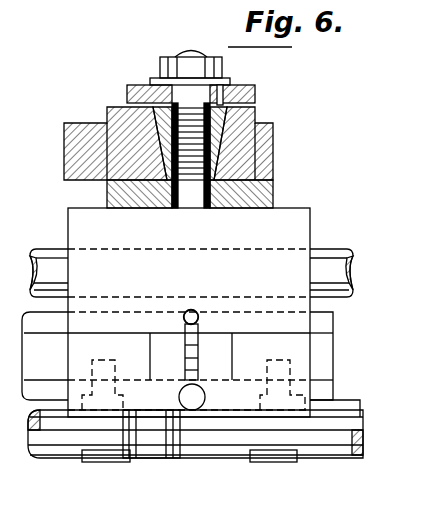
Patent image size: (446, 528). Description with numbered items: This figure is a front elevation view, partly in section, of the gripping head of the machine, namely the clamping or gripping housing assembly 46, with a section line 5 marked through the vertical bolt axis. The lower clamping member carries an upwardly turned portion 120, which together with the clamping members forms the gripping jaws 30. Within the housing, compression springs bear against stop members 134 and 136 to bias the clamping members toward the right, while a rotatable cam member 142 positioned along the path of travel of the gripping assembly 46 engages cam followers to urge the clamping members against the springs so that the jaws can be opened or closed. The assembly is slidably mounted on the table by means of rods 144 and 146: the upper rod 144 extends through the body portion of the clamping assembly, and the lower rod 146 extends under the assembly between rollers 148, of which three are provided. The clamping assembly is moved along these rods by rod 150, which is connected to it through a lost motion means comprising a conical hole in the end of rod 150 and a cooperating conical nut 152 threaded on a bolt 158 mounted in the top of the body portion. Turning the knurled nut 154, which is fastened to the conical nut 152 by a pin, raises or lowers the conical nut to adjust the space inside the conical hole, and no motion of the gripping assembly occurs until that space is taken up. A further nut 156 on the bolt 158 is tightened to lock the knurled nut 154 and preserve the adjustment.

The section line 5- 5 is at (191, 100).
The gripping jaws 30 is at (220, 295).
The clamping or gripping housing assembly 46 is at (64, 341).
The upwardly turned portion 120 is at (186, 360).
The stop member 134 is at (205, 397).
The stop member 136 is at (198, 313).
The rotatable cam member 142 is at (333, 325).
The upper rod 144 is at (340, 249).
The lower rod 146 is at (340, 410).
The rollers 148 is at (100, 458).
The rod 150 is at (64, 160).
The conical nut 152 is at (152, 133).
The knurled nut 154 is at (255, 92).
The nut 156 is at (224, 68).
The bolt 158 is at (178, 47).